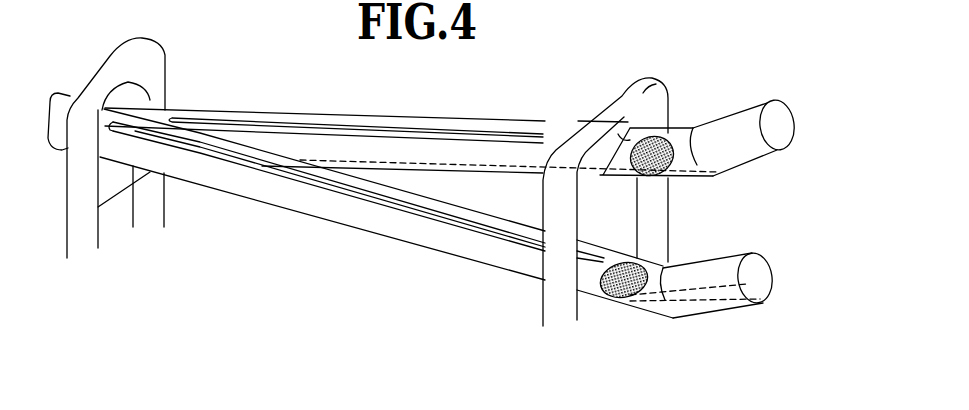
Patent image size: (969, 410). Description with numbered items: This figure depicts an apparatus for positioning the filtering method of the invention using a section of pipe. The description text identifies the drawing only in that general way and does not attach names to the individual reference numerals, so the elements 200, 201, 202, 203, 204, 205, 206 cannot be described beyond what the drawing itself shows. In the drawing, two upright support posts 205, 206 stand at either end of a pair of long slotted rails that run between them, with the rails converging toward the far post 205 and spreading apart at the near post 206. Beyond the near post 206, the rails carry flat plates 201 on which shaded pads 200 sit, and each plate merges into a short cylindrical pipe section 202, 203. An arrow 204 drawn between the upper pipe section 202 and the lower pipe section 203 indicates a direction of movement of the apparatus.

The pad 200 is at (630, 297).
The upper plate 201 is at (683, 120).
The upper tube 202 is at (765, 154).
The lower tube 203 is at (713, 303).
The direction of movement 204 is at (752, 176).
The left support post 205 is at (147, 67).
The right support post 206 is at (645, 88).